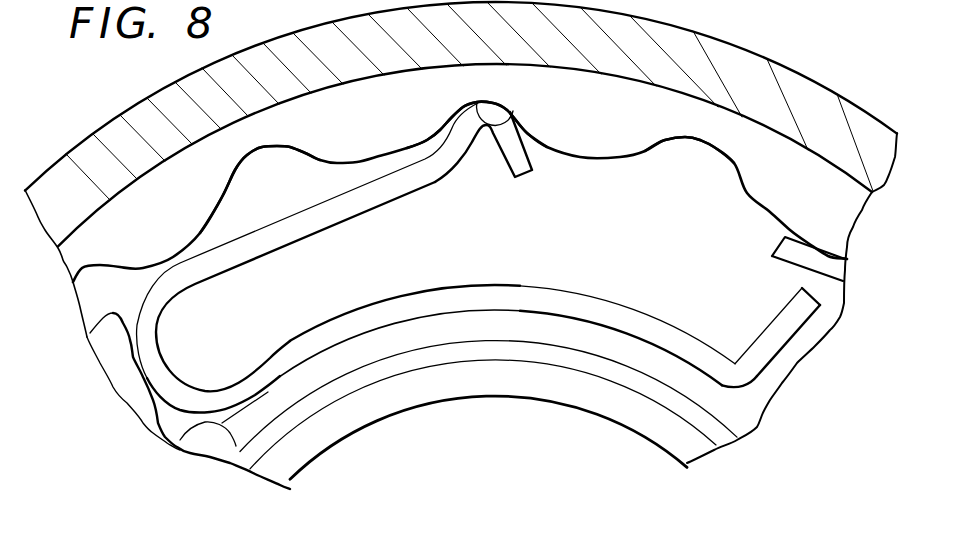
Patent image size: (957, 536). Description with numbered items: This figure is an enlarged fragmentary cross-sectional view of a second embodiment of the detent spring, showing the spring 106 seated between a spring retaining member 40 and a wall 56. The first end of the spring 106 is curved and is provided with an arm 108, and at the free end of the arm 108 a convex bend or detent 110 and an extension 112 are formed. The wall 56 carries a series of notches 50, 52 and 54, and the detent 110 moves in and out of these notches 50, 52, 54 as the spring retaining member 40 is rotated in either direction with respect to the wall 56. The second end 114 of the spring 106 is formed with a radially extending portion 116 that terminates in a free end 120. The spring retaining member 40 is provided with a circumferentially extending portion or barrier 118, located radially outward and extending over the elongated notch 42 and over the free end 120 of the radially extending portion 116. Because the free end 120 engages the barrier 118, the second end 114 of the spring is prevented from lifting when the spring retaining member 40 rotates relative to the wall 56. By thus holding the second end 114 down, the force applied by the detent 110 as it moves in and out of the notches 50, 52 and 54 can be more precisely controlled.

The spring retaining member 40 is at (107, 348).
The elongated notch 42 is at (182, 445).
The notch 50 is at (257, 150).
The notch 52 is at (490, 100).
The notch 54 is at (704, 143).
The wall 56 is at (355, 145).
The spring 106 is at (517, 251).
The arm 108 is at (357, 218).
The convex bend or detent 110 is at (513, 110).
The extension 112 is at (532, 153).
The second end of the spring 114 is at (775, 350).
The radially extending portion 116 is at (797, 315).
The circumferentially extending portion or barrier 118 is at (777, 250).
The free end 120 is at (786, 308).